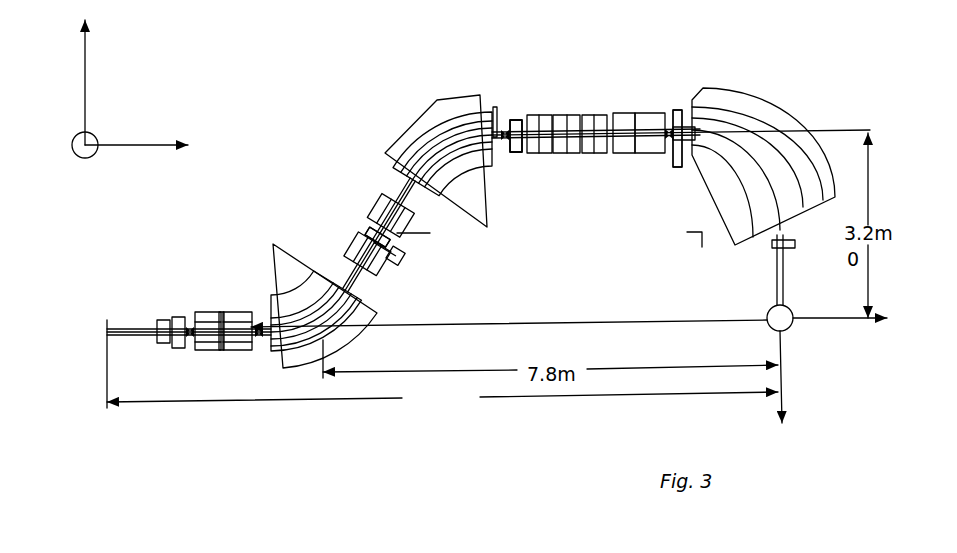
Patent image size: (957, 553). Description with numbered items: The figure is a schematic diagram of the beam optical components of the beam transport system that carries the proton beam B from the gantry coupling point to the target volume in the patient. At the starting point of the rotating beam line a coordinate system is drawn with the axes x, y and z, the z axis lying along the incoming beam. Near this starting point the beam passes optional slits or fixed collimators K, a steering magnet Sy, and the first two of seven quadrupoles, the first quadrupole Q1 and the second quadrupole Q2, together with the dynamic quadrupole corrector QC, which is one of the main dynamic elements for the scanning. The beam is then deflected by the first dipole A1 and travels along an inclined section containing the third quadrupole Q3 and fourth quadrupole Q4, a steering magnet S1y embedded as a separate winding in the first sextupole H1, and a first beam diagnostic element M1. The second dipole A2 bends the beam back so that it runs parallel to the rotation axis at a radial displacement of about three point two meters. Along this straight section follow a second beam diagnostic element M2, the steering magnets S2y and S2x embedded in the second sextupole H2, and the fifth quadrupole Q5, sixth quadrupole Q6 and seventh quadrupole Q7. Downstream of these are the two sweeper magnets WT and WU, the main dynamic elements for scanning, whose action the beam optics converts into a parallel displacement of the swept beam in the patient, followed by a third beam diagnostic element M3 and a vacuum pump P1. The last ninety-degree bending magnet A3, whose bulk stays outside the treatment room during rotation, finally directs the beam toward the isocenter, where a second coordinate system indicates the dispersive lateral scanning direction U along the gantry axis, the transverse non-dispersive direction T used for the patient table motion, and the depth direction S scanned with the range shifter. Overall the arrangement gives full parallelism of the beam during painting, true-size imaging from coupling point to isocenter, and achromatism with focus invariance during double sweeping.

The x coordinate axis x is at (95, 78).
The y coordinate axis y is at (87, 157).
The z coordinate axis z is at (136, 124).
The proton beam B is at (124, 328).
The slits or fixed collimators K is at (442, 365).
The steering magnet Sy is at (177, 312).
The first quadrupole Q1 is at (210, 352).
The second quadrupole Q2 is at (237, 352).
The dynamic quadrupole corrector QC is at (223, 308).
The first dipole A1 is at (353, 340).
The third quadrupole Q3 is at (350, 242).
The fourth quadrupole Q4 is at (377, 205).
The steering magnet S1y is at (365, 217).
The first sextupole H1 is at (303, 196).
The first beam diagnostic element M1 is at (407, 262).
The second dipole A2 is at (403, 140).
The second beam diagnostic element M2 is at (495, 97).
The steering magnet S2y is at (528, 76).
The steering magnet S2x is at (528, 88).
The second sextupole H2 is at (521, 115).
The fifth quadrupole Q5 is at (533, 157).
The sixth quadrupole Q6 is at (567, 157).
The seventh quadrupole Q7 is at (597, 157).
The sweeper magnet WT is at (620, 110).
The sweeper magnet WU is at (650, 110).
The third beam diagnostic element M3 is at (680, 168).
The vacuum pump P1 is at (685, 93).
The ninety-degree bending magnet A3 is at (795, 138).
The transverse non-dispersive direction T is at (770, 330).
The dispersive scanning direction U is at (840, 337).
The depth scanning direction S is at (795, 382).